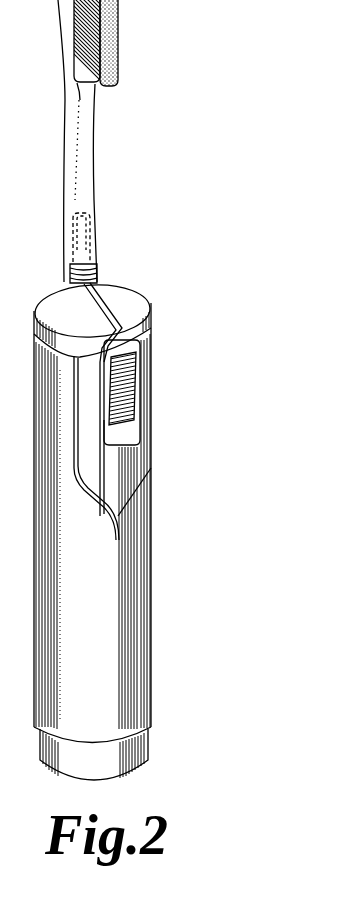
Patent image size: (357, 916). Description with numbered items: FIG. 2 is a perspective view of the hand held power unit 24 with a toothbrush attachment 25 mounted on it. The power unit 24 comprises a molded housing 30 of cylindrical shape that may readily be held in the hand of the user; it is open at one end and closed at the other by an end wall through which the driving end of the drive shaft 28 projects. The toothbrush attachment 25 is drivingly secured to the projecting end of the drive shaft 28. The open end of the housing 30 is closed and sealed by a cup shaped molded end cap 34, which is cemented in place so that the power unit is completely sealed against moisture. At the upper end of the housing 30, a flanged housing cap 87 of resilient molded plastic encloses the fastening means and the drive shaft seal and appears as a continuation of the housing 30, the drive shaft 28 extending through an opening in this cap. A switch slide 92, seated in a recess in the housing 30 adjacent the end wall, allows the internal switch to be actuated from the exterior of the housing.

The hand held power unit 24 is at (113, 390).
The toothbrush attachment 25 is at (90, 152).
The drive shaft 28 is at (93, 253).
The molded housing 30 is at (152, 585).
The end cap 34 is at (150, 739).
The flanged housing cap 87 is at (137, 293).
The switch slide 92 is at (130, 393).